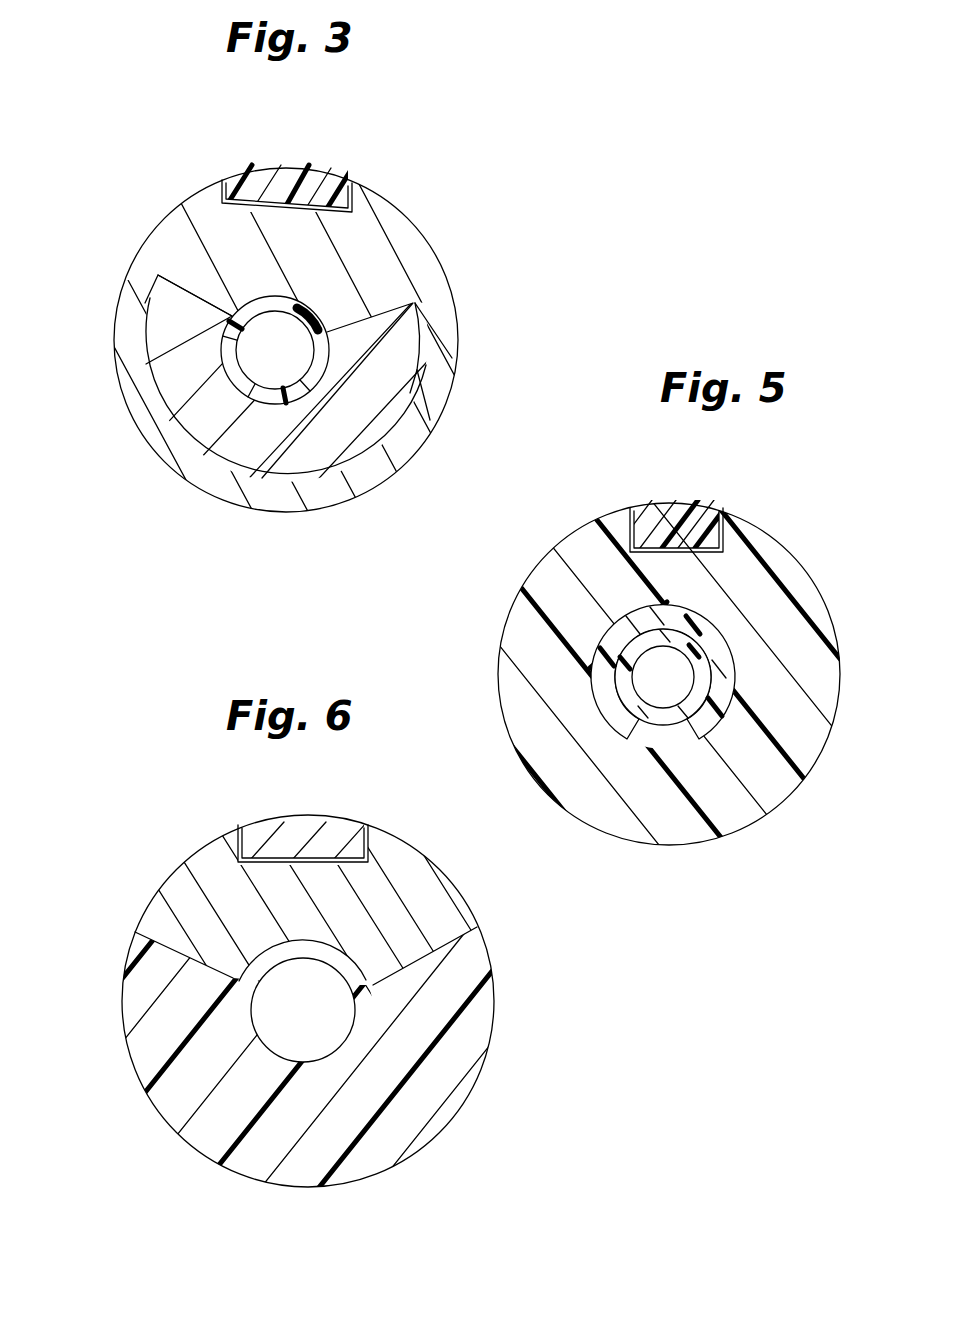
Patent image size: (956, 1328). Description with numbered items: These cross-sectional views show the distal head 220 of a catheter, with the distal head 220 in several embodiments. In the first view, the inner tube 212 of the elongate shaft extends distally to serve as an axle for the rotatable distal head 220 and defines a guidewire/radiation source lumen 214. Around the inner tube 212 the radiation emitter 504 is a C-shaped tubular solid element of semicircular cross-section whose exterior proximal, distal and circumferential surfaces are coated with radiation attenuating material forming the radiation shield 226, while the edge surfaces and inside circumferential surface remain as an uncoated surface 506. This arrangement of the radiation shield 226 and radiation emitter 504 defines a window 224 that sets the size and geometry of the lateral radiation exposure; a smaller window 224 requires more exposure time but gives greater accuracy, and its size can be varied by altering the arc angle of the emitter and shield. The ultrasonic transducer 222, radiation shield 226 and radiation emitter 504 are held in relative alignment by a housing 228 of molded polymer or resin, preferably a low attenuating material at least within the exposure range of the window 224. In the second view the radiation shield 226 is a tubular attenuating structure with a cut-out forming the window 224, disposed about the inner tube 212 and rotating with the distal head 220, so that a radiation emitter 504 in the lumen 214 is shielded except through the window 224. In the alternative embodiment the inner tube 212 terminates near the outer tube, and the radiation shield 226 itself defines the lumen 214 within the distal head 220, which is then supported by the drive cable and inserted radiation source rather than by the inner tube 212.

In FIG. 3, the inner tube 212 is at (292, 363).
In FIG. 5, the inner tube 212 is at (657, 723).
In FIG. 3, the guidewire/radiation source lumen 214 is at (297, 363).
In FIG. 5, the guidewire/radiation source lumen 214 is at (680, 683).
In FIG. 6, the guidewire/radiation source lumen 214 is at (278, 1007).
In FIG. 3, the distal head 220 is at (456, 233).
In FIG. 5, the distal head 220 is at (804, 556).
In FIG. 6, the distal head 220 is at (126, 886).
In FIG. 3, the ultrasonic transducer 222 is at (262, 178).
In FIG. 5, the ultrasonic transducer 222 is at (697, 525).
In FIG. 6, the ultrasonic transducer 222 is at (273, 838).
In FIG. 3, the window 224 is at (308, 265).
In FIG. 5, the window 224 is at (694, 770).
In FIG. 3, the radiation shield 226 is at (193, 455).
In FIG. 5, the radiation shield 226 is at (720, 717).
In FIG. 6, the radiation shield 226 is at (430, 1080).
In FIG. 3, the housing 228 is at (440, 302).
In FIG. 5, the housing 228 is at (532, 660).
In FIG. 6, the housing 228 is at (397, 918).
In FIG. 3, the radiation emitter 504 is at (160, 337).
In FIG. 3, the uncoated surface 506 is at (182, 283).